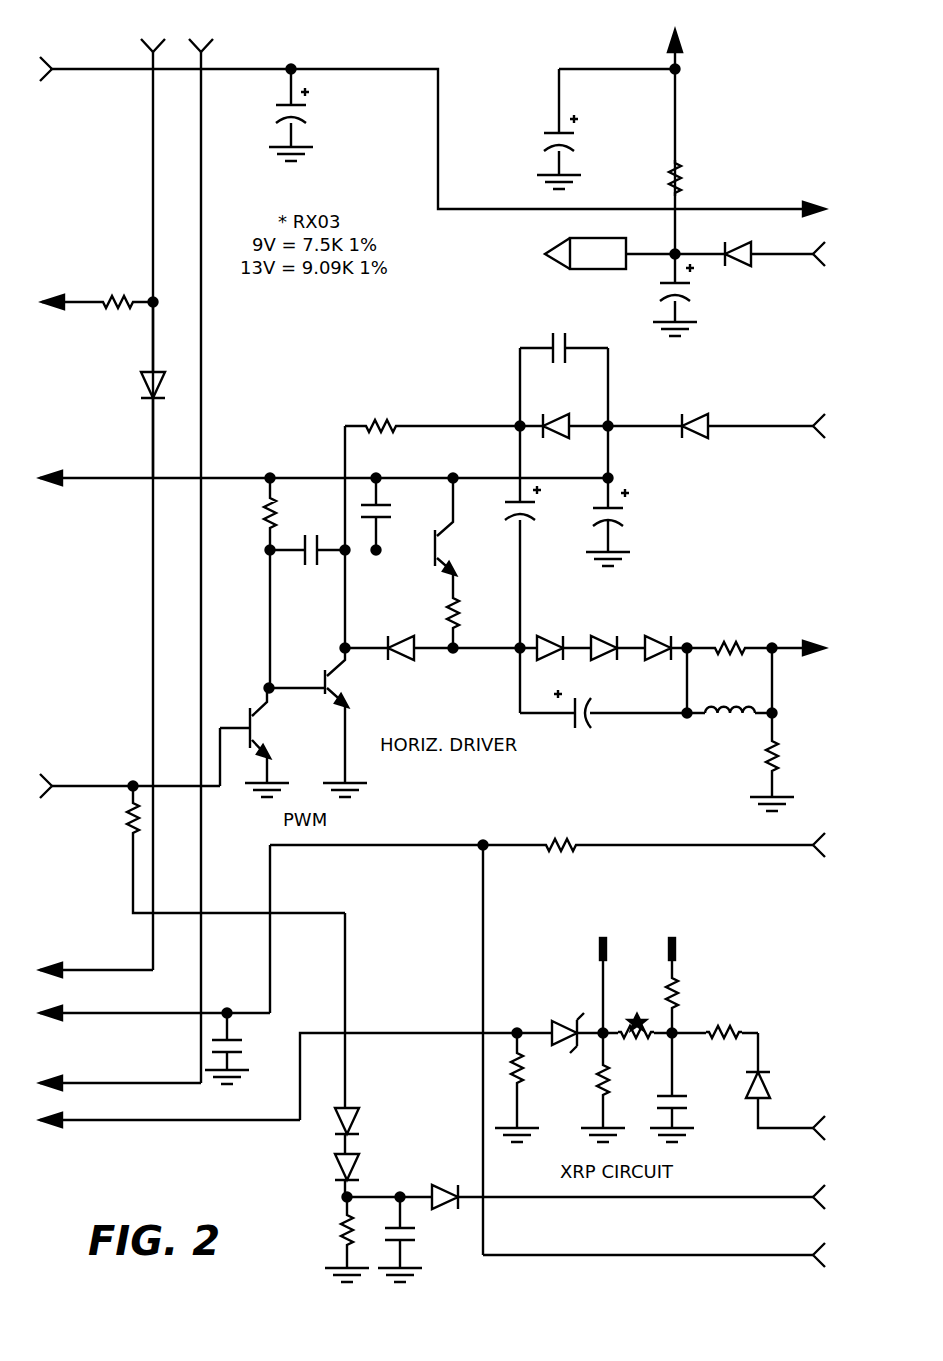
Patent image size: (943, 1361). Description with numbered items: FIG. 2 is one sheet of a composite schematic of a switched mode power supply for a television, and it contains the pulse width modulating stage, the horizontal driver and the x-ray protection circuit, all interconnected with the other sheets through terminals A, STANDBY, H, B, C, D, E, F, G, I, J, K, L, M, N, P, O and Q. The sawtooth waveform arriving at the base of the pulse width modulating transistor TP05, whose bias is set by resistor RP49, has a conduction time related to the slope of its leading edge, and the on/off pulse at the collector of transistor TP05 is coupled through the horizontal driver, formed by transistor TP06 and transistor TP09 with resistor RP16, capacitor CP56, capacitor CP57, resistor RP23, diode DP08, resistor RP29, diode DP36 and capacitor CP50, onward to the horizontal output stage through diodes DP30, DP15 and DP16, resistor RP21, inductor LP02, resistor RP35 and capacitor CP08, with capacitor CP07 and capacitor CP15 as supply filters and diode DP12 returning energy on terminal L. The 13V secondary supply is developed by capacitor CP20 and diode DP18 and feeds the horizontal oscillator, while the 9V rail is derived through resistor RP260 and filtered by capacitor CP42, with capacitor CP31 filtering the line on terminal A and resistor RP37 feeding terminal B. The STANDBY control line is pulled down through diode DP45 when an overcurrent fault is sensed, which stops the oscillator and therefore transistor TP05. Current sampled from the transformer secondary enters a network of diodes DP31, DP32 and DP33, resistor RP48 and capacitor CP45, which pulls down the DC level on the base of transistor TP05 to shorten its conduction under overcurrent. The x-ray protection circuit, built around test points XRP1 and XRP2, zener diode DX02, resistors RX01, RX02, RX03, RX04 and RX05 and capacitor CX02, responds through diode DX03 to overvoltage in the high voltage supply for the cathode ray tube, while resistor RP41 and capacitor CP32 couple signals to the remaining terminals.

The input connector A is at (58, 64).
The STANDBY control line STANDBY is at (127, 33).
The input connector H is at (201, 33).
The output connector B is at (70, 298).
The output connector C is at (92, 475).
The input connector D is at (48, 784).
The output connector E is at (58, 968).
The output connector F is at (58, 1011).
The output connector G is at (58, 1081).
The output connector I is at (58, 1118).
The output connector J is at (798, 204).
The input connector K is at (808, 252).
The input connector L is at (808, 422).
The output connector M is at (802, 642).
The input connector N is at (806, 850).
The input connector P is at (810, 1135).
The input connector O is at (810, 1192).
The input connector Q is at (808, 1248).
The 9V supply terminal 9V is at (671, 28).
The 13 volt supply 13V is at (585, 253).
The capacitor 330u 200V CP31 is at (269, 122).
The capacitor 100u 16V CP42 is at (535, 149).
The resistor 33 ohm 0.7W RP260 is at (645, 171).
The capacitor CP20 is at (643, 302).
The diode DP18 is at (751, 284).
The resistor 10K RP37 is at (113, 278).
The diode DP45 is at (130, 372).
The capacitor 1n CP50 is at (560, 322).
The resistor 680 RP29 is at (381, 405).
The diode BA157 DP36 is at (559, 402).
The diode BA157 DP12 is at (702, 402).
The resistor 1.2K RP16 is at (245, 516).
The capacitor 1n CP56 is at (310, 575).
The capacitor 1n CP57 is at (403, 516).
The transistor BC368 TP09 is at (476, 536).
The resistor 10 ohm 3W RP23 is at (480, 620).
The diode BA157 DP08 is at (405, 623).
The capacitor 10u 35V CP07 is at (548, 523).
The capacitor 10u 16V CP15 is at (634, 527).
The diode 1N4001 DP30 is at (599, 625).
The diode 1N4001 DP15 is at (610, 625).
The diode 1N4001 DP16 is at (662, 625).
The resistor 47 RP21 is at (727, 623).
The inductor 6uH LP02 is at (730, 685).
The resistor 100 RP35 is at (755, 771).
The capacitor 100u 35V CP08 is at (581, 735).
The transistor BC368 horizontal driver TP06 is at (366, 722).
The pulse width modulating transistor TP05 is at (294, 742).
The resistor 1K RP49 is at (107, 821).
The resistor 2.2K RP41 is at (559, 821).
The capacitor 470p CP32 is at (247, 1058).
The XRP test pin 2 XRP2 is at (599, 936).
The XRP test pin 1 XRP1 is at (674, 936).
The zener diode ZDP 10V DX02 is at (543, 1012).
The resistor RX03 selectable RX03 is at (636, 1017).
The resistor 2.2K RX04 is at (702, 1002).
The resistor 100 RX05 is at (724, 1054).
The diode DX03 is at (787, 1081).
The resistor 22K RX01 is at (538, 1096).
The resistor 10K 1% RX02 is at (621, 1098).
The capacitor 100n CX02 is at (696, 1113).
The diode DP33 is at (373, 1126).
The diode 1N DP32 is at (320, 1171).
The diode DP31 is at (443, 1175).
The resistor RP48 is at (329, 1245).
The capacitor CP45 is at (421, 1249).